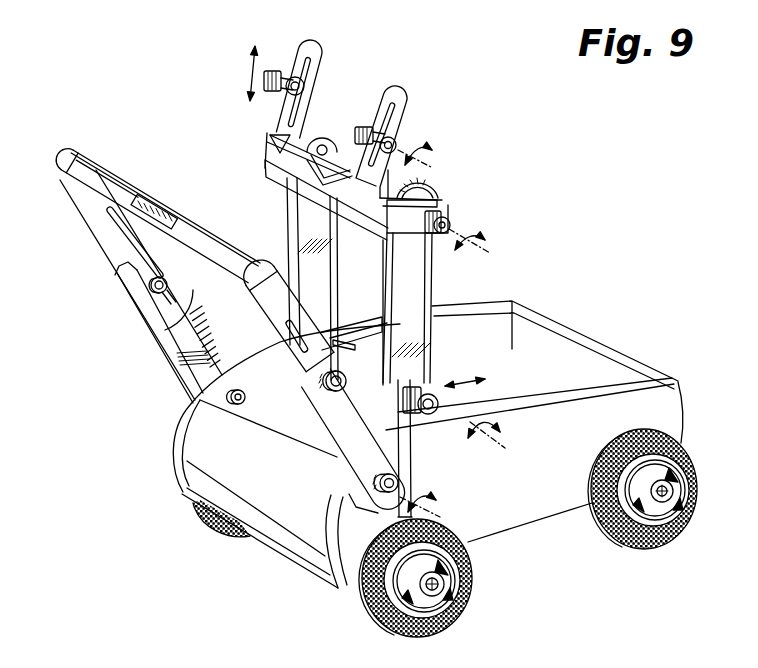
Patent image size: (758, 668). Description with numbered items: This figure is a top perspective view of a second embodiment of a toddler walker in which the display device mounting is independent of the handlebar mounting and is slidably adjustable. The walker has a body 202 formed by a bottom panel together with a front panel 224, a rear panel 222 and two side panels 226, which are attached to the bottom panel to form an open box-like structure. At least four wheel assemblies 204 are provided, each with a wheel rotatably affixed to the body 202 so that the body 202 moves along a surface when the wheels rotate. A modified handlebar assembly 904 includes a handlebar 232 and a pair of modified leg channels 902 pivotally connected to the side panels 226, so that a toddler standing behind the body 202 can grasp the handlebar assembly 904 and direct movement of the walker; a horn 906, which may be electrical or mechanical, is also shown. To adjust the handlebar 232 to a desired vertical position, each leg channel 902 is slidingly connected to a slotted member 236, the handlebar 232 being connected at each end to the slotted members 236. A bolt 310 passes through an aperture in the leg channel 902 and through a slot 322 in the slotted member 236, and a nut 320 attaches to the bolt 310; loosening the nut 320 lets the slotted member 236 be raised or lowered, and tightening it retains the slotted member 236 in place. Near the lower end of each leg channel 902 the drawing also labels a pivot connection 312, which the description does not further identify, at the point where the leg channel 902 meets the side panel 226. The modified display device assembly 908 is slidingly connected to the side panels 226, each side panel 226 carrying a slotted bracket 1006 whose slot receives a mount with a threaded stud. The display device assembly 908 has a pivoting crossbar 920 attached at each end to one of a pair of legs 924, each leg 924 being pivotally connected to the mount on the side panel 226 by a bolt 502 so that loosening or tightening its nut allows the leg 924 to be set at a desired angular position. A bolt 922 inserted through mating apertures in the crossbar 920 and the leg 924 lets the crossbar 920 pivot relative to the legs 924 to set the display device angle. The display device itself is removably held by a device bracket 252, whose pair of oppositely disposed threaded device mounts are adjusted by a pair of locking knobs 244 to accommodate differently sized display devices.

The body 202 is at (575, 313).
The wheel assembly 204 is at (475, 573).
The rear panel 222 is at (275, 530).
The front panel 224 is at (613, 375).
The side panel 226 is at (657, 412).
The handlebar 232 is at (110, 174).
The slotted member 236 is at (90, 200).
The locking knob 244 is at (287, 60).
The device bracket 252 is at (263, 140).
The bolt 310 is at (317, 407).
The pivot 312 is at (413, 484).
The nut 320 is at (170, 289).
The slot 322 is at (122, 234).
The bolt 502 is at (430, 391).
The leg channel 902 is at (177, 370).
The handlebar assembly 904 is at (110, 313).
The horn 906 is at (160, 208).
The display device assembly 908 is at (440, 133).
The crossbar 920 is at (366, 205).
The bolt 922 is at (450, 218).
The leg 924 is at (287, 207).
The slotted bracket 1006 is at (368, 328).